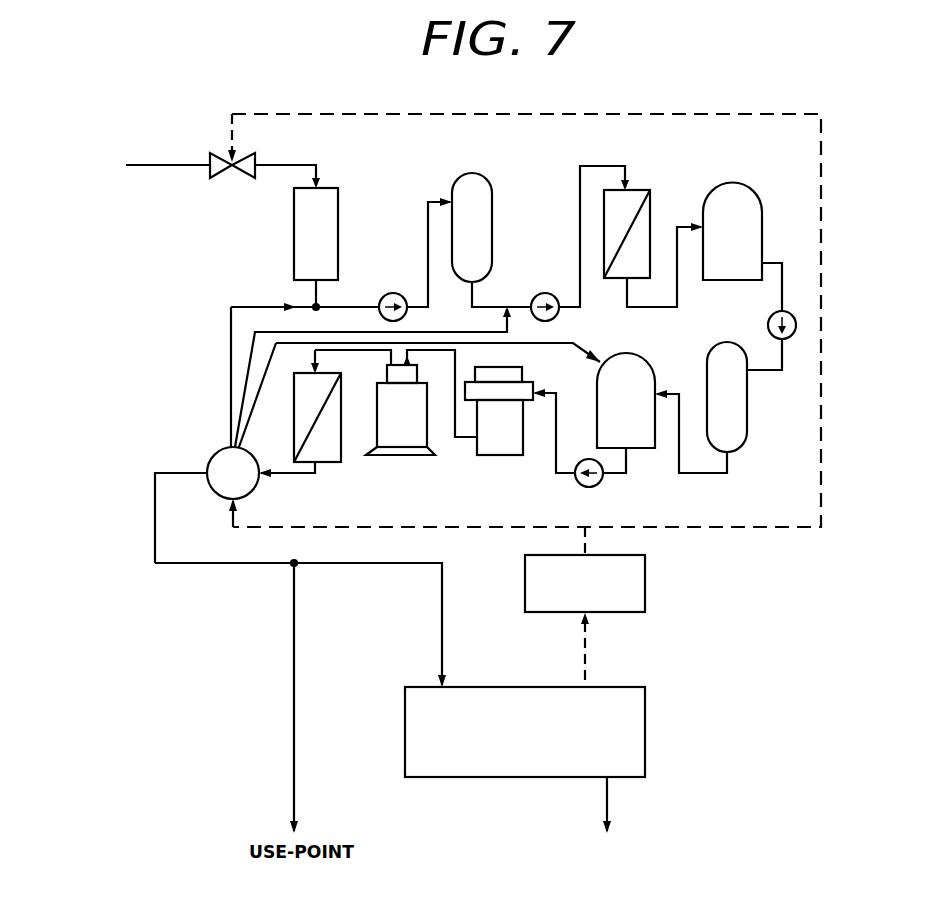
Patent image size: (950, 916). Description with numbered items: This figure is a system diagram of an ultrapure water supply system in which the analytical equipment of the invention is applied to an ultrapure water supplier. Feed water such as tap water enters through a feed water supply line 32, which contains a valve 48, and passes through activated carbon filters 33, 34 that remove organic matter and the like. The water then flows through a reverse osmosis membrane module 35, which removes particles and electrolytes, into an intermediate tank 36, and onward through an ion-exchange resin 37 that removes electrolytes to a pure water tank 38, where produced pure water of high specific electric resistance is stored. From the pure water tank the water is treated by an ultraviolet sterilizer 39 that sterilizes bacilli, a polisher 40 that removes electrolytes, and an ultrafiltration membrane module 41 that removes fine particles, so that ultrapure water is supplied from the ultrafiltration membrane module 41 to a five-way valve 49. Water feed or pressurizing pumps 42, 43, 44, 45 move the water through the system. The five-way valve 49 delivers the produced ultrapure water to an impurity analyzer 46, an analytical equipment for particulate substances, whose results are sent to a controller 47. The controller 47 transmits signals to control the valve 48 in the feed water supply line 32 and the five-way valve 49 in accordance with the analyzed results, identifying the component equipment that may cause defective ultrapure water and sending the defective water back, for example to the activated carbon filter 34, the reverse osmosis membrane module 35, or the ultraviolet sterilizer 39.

The feed water supply line 32 is at (155, 162).
The activated carbon filter 33 is at (340, 202).
The activated carbon filter 34 is at (472, 173).
The reverse osmosis membrane module 35 is at (652, 208).
The intermediate tank 36 is at (730, 183).
The ion-exchange resin 37 is at (749, 406).
The pure water tank 38 is at (637, 357).
The ultraviolet sterilizer 39 is at (497, 457).
The polisher 40 is at (400, 457).
The ultrafiltration membrane module 41 is at (331, 464).
The water feed pump 42 is at (393, 292).
The water feed pump 43 is at (545, 292).
The water feed pump 44 is at (768, 321).
The water feed pump 45 is at (598, 488).
The impurity analyzer 46 is at (647, 712).
The controller 47 is at (647, 575).
The valve 48 is at (245, 180).
The five-way valve 49 is at (211, 453).